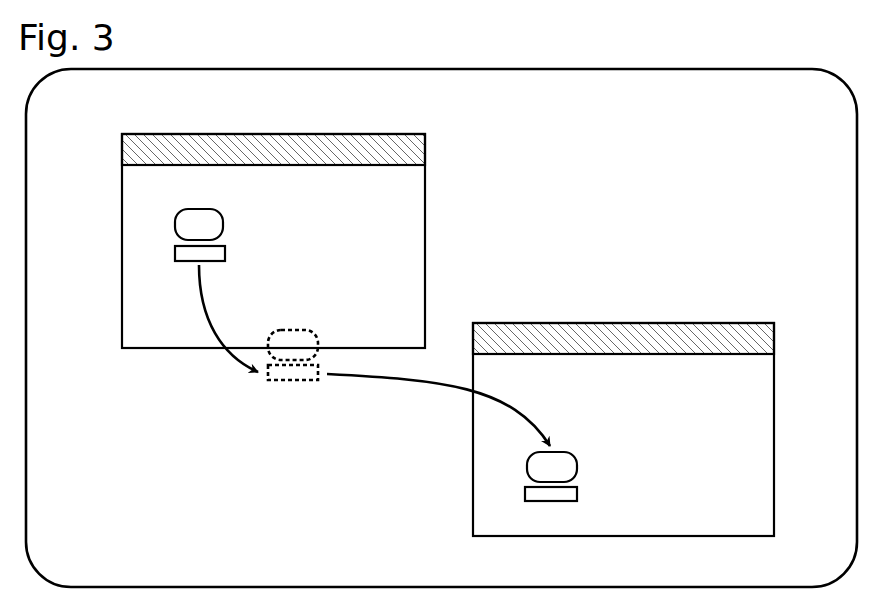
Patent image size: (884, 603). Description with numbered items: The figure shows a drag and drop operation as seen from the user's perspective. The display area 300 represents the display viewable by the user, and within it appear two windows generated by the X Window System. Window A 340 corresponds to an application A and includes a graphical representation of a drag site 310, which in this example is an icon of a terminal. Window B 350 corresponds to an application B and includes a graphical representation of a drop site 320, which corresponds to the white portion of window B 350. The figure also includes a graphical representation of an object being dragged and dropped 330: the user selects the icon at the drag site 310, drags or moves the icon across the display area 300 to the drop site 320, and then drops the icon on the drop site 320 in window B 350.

The display area 300 is at (783, 108).
The drag site 310 is at (240, 222).
The drop site 320 is at (603, 457).
The object being dragged and dropped 330 is at (175, 227).
The window A 340 is at (417, 196).
The window B 350 is at (764, 386).